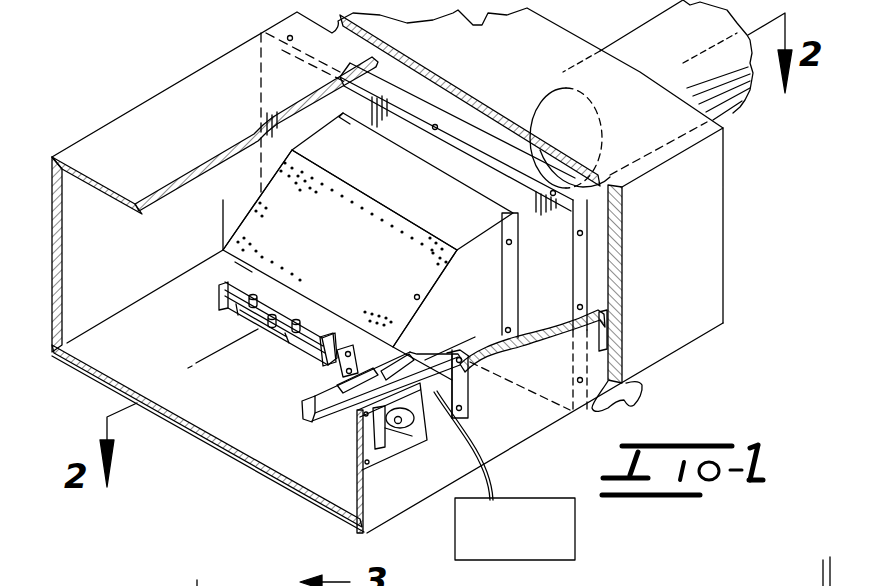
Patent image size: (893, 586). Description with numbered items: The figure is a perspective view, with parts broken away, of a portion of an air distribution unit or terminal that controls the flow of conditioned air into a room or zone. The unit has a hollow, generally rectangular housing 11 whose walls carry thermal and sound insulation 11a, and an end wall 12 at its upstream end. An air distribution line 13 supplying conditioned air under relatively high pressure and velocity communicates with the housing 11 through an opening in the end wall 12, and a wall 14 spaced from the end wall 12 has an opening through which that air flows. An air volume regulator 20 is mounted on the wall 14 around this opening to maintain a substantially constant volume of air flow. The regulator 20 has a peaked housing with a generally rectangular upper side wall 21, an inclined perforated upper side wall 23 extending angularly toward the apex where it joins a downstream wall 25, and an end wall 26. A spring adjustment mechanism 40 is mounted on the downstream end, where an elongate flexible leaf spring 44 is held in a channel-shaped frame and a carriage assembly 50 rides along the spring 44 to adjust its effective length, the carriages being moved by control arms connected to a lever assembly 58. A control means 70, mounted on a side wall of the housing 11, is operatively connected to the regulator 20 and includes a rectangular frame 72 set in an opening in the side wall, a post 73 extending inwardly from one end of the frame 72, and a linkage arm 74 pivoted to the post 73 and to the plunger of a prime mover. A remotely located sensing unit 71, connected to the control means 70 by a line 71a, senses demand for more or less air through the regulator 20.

The housing 11 is at (157, 118).
The thermal and sound insulation 11a is at (222, 442).
The end wall 12 is at (603, 223).
The air distribution line 13 is at (717, 80).
The wall 14 is at (261, 183).
The air volume regulator 20 is at (323, 246).
The upper side wall 21 is at (418, 197).
The inclined perforated upper side wall 23 is at (392, 277).
The downstream wall 25 is at (238, 265).
The end wall 26 is at (482, 315).
The spring adjustment mechanism 40 is at (227, 300).
The leaf spring 44 is at (243, 302).
The carriage assembly 50 is at (298, 306).
The lever assembly 58 is at (333, 367).
The control means 70 is at (332, 452).
The sensing unit 71 is at (548, 505).
The control cable 71a is at (468, 432).
The rectangular frame 72 is at (450, 380).
The post 73 is at (300, 437).
The linkage arm 74 is at (323, 388).